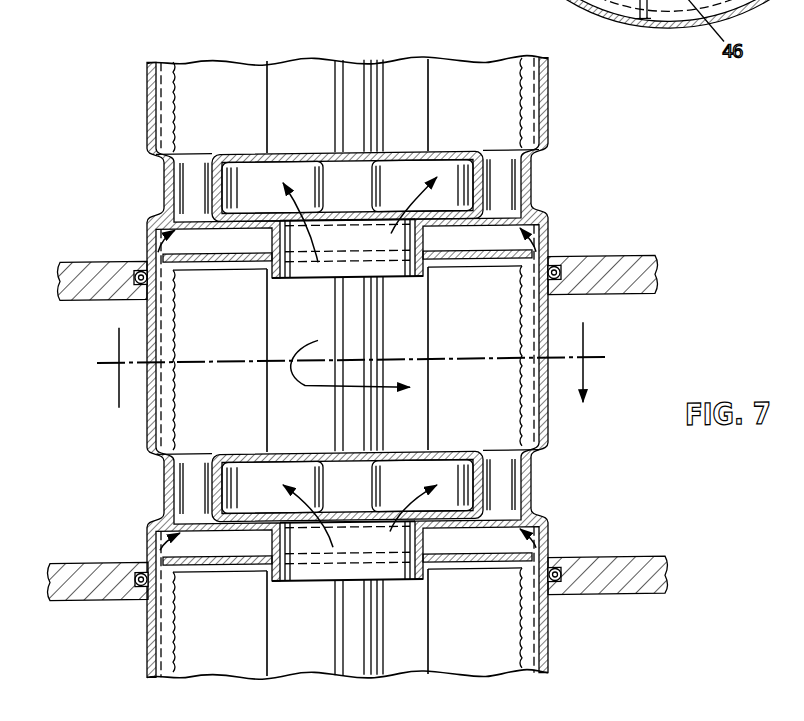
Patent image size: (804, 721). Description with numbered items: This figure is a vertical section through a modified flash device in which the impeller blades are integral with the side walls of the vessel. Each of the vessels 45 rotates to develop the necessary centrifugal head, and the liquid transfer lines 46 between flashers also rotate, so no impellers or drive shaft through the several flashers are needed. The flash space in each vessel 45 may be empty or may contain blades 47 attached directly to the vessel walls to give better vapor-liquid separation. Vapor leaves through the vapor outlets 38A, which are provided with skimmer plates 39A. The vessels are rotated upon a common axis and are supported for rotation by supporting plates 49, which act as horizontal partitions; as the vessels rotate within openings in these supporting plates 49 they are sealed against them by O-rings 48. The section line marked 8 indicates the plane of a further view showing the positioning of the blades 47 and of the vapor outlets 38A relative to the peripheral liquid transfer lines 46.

The vessel 45 is at (147, 98).
The liquid transfer line 46 is at (193, 198).
The blade 47 is at (333, 80).
The O-ring 48 is at (137, 267).
The supporting plate 49 is at (597, 272).
The vapor outlet 38A is at (373, 245).
The skimmer plate 39A is at (453, 259).
The section line 8- 8 is at (351, 365).